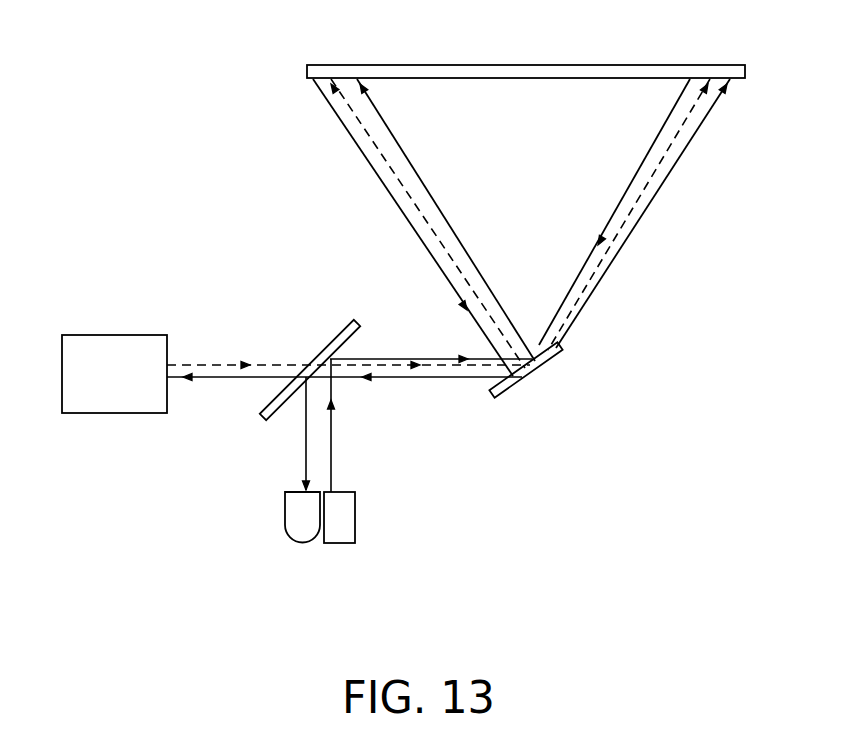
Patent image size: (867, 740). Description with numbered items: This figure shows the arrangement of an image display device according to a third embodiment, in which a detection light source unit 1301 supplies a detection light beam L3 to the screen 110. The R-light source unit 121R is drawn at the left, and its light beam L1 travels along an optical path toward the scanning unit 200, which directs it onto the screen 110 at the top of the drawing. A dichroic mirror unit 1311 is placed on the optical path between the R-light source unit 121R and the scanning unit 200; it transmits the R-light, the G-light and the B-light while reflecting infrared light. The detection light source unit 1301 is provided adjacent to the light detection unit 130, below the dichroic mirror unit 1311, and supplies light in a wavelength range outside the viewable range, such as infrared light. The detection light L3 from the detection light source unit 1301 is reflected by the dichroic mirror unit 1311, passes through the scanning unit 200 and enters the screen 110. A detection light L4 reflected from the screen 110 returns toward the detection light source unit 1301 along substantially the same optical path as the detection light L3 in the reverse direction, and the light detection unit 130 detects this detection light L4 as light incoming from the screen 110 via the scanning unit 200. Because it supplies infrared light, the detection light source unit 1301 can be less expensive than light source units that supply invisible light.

The screen 110 is at (375, 65).
The R-light source unit 121R is at (150, 335).
The dichroic mirror unit 1311 is at (337, 333).
The scanning unit 200 is at (550, 363).
The light detection unit 130 is at (300, 540).
The detection light source unit 1301 is at (341, 544).
The light beam L1 is at (375, 147).
The detection light beam L3 is at (432, 190).
The detection light L4 is at (372, 160).